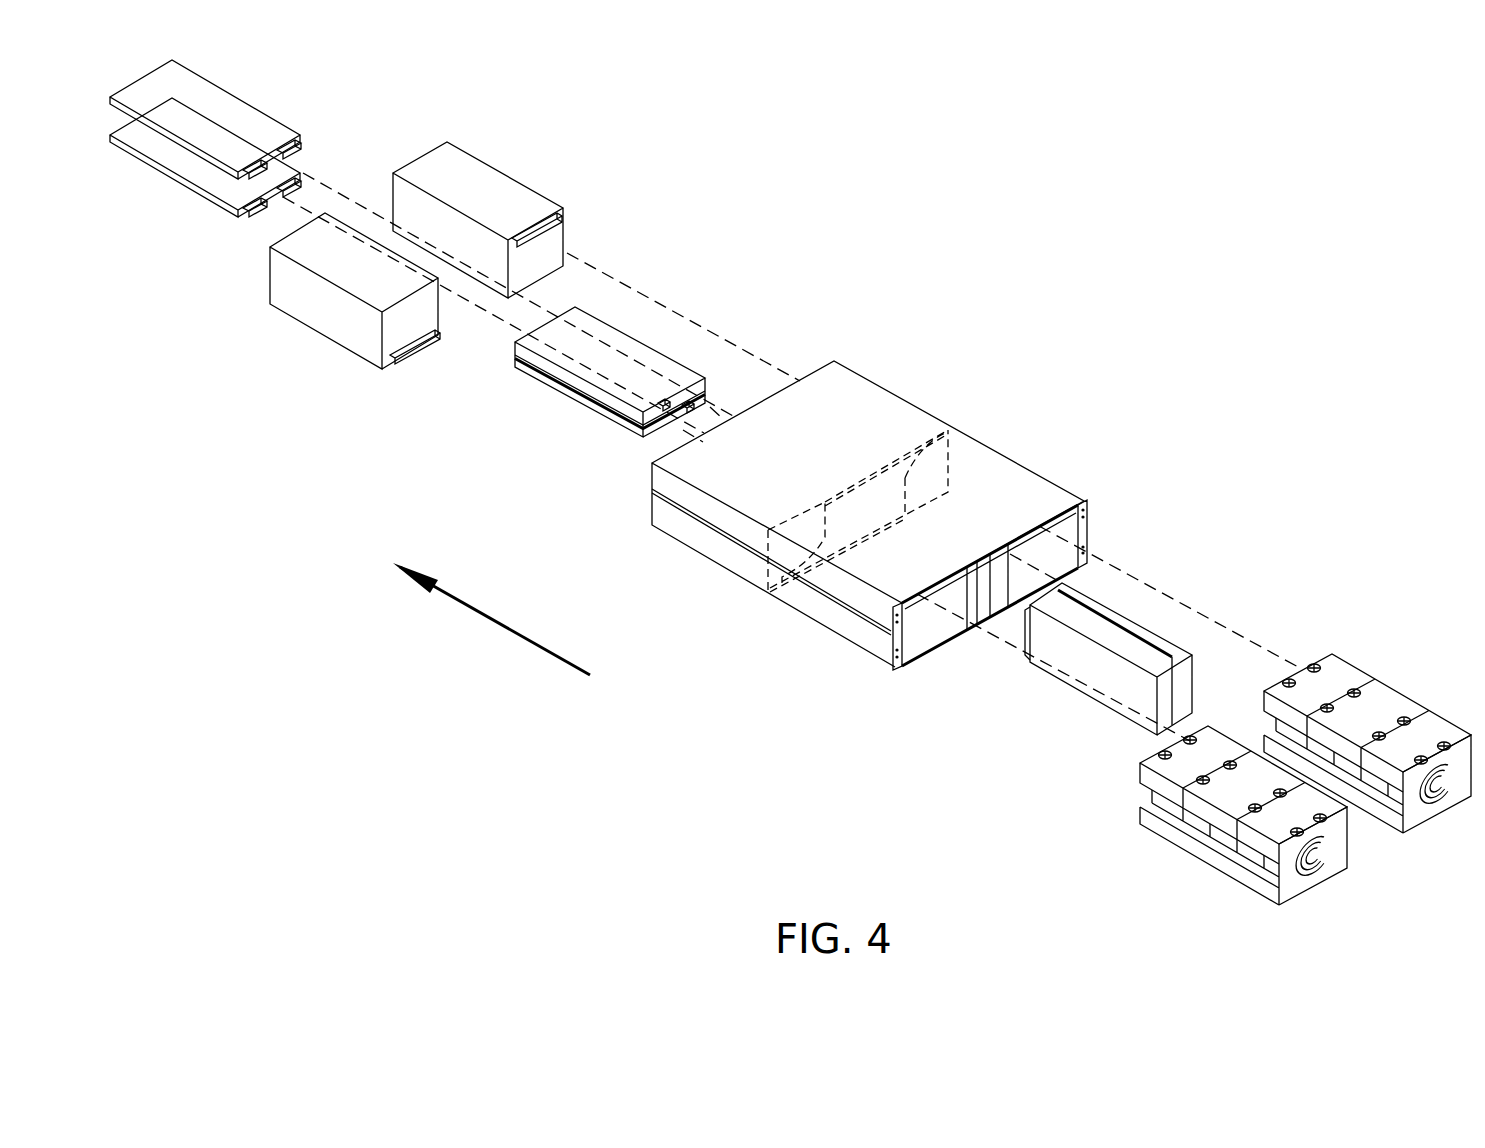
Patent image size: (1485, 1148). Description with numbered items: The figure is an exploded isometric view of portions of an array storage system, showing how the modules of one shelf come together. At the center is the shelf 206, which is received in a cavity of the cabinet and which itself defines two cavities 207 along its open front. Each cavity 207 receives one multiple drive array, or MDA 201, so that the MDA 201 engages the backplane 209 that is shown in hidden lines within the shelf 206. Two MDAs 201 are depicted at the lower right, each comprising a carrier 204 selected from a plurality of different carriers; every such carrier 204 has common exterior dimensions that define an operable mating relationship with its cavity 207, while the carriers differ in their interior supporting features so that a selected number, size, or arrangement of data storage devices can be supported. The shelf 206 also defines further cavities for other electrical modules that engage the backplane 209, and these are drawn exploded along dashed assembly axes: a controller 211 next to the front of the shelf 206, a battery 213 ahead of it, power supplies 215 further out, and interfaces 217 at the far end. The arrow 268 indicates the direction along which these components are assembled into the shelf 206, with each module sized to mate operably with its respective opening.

The multiple drive array (MDA) 201 is at (1135, 855).
The carrier 204 is at (1137, 760).
The shelf 206 is at (730, 573).
The cavity 207 is at (1090, 527).
The backplane 209 is at (867, 490).
The controller 211 is at (1158, 643).
The battery 213 is at (640, 347).
The power supply 215 is at (500, 190).
The interface 217 is at (260, 125).
The insertion direction 268 is at (513, 628).